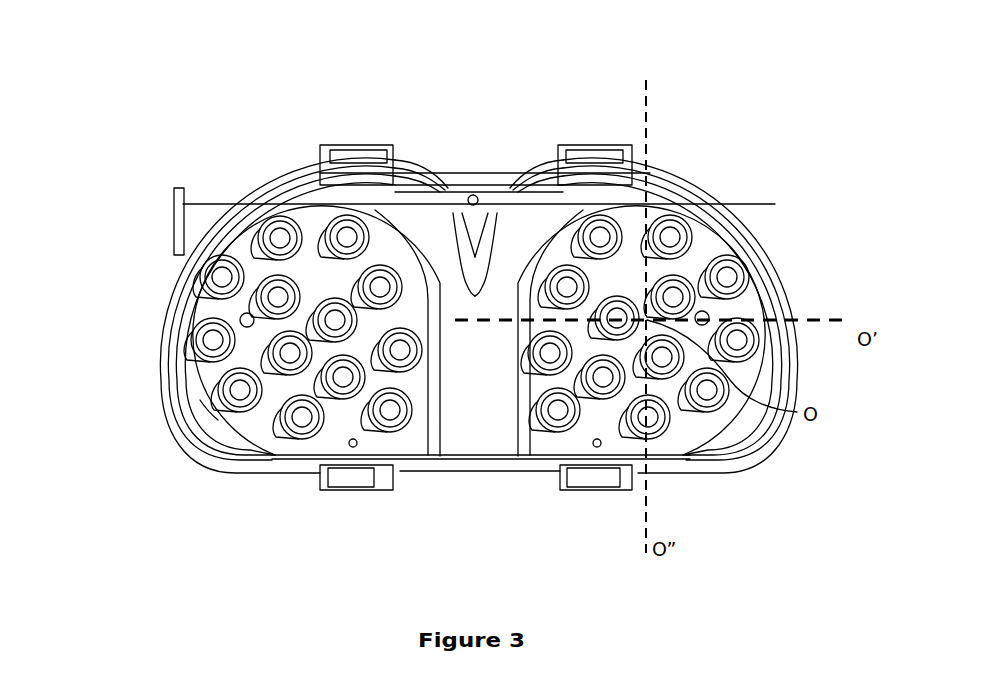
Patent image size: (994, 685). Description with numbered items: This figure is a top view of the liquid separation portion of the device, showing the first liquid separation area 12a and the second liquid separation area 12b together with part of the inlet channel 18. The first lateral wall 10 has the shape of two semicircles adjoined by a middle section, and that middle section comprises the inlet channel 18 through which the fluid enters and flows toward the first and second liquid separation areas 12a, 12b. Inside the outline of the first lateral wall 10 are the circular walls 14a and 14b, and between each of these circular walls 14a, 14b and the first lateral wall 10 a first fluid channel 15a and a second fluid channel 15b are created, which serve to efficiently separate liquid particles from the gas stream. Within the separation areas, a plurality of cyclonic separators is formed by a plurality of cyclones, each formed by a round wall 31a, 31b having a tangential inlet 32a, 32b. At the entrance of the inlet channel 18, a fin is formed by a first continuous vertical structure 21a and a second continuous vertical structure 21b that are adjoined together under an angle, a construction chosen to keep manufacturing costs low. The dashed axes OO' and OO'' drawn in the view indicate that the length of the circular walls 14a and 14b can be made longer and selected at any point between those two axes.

The first lateral wall 10 is at (230, 203).
The first liquid separation area 12a is at (265, 268).
The second liquid separation area 12b is at (652, 258).
The first circular wall 14a is at (427, 289).
The second circular wall 14b is at (523, 273).
The first fluid channel 15a is at (427, 212).
The second fluid channel 15b is at (537, 213).
The inlet channel 18 is at (473, 393).
The first continuous vertical structure 21a is at (457, 230).
The second continuous vertical structure 21b is at (493, 227).
The round wall 31a is at (267, 321).
The round wall 31b is at (253, 414).
The tangential inlet 32a is at (247, 307).
The tangential inlet 32b is at (215, 410).